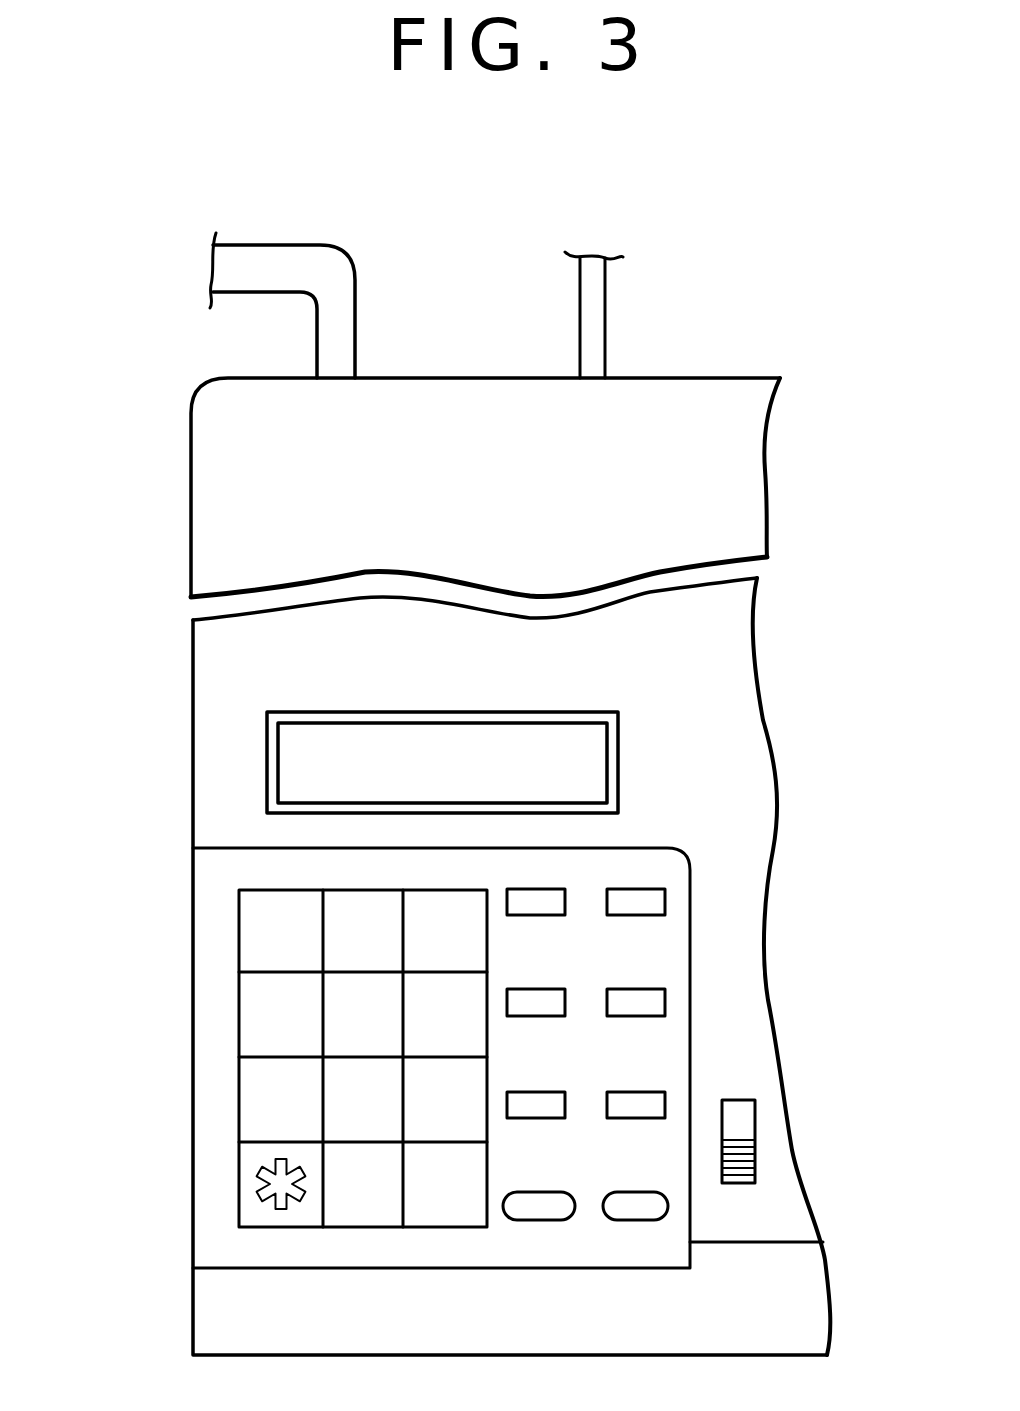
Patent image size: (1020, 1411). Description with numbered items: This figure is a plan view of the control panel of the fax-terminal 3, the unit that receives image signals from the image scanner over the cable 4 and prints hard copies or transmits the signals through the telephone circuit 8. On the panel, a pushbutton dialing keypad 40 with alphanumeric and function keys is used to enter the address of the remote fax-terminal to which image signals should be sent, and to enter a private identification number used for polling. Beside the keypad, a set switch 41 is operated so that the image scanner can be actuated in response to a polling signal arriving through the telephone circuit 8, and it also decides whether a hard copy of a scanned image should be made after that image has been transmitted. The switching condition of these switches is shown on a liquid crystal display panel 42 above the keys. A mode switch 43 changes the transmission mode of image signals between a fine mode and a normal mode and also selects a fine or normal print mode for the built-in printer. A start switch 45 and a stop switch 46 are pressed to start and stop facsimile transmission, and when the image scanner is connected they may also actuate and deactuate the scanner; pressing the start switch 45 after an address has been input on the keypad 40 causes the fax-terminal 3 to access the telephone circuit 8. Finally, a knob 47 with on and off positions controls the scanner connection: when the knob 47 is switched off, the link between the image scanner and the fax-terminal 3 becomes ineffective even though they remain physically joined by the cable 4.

The fax-terminal 3 is at (178, 776).
The cable 4 is at (283, 248).
The telephone circuit 8 is at (607, 313).
The pushbutton dialing keypad 40 is at (208, 1042).
The set switch 41 is at (630, 1092).
The liquid crystal display panel 42 is at (478, 730).
The mode switch 43 is at (535, 1092).
The start switch 45 is at (668, 1207).
The stop switch 46 is at (510, 1221).
The knob 47 is at (755, 1150).